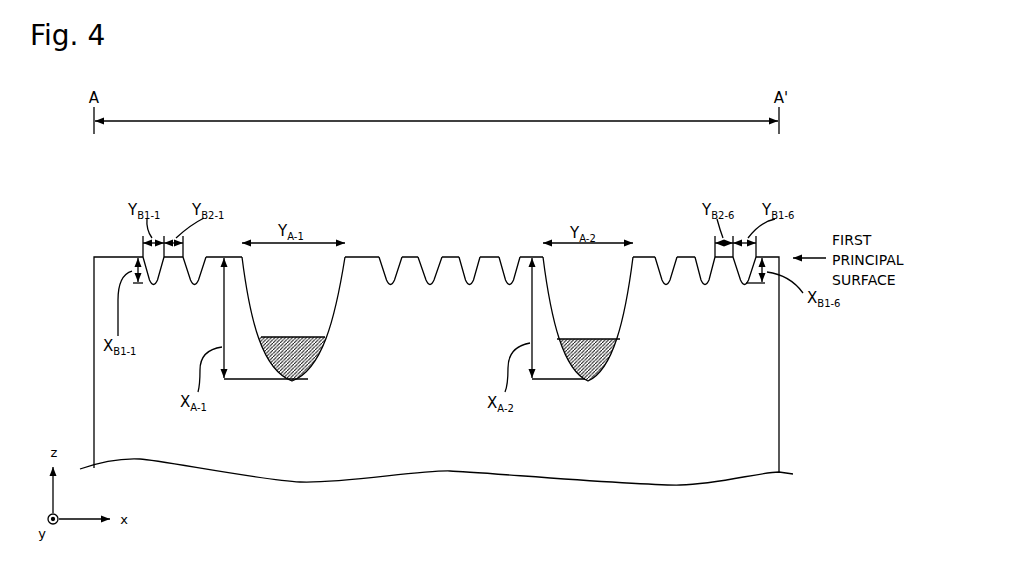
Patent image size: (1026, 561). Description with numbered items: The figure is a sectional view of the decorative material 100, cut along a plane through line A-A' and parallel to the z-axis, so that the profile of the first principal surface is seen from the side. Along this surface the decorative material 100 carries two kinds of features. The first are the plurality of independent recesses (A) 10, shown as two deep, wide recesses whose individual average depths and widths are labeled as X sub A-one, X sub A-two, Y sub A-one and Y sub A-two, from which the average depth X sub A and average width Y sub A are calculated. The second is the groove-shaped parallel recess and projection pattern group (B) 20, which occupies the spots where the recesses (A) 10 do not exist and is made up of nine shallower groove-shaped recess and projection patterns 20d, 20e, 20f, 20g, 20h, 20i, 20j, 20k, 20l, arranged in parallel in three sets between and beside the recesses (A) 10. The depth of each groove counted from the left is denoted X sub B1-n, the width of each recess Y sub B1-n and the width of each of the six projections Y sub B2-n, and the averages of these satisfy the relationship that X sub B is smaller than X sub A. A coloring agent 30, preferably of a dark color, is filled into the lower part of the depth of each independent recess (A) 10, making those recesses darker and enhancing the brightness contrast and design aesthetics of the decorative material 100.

The decorative material 100 is at (820, 200).
The independent recess (A) 10 is at (345, 257).
The groove-shaped parallel recess and projection pattern group (B) 20 is at (379, 257).
The groove-shaped recess and projection pattern 20d is at (154, 289).
The groove-shaped recess and projection pattern 20e is at (194, 289).
The groove-shaped recess and projection pattern 20f is at (391, 289).
The groove-shaped recess and projection pattern 20g is at (430, 289).
The groove-shaped recess and projection pattern 20h is at (470, 289).
The groove-shaped recess and projection pattern 20i is at (509, 289).
The groove-shaped recess and projection pattern 20j is at (666, 289).
The groove-shaped recess and projection pattern 20k is at (705, 289).
The groove-shaped recess and projection pattern 20l is at (744, 289).
The coloring agent 30 is at (304, 384).